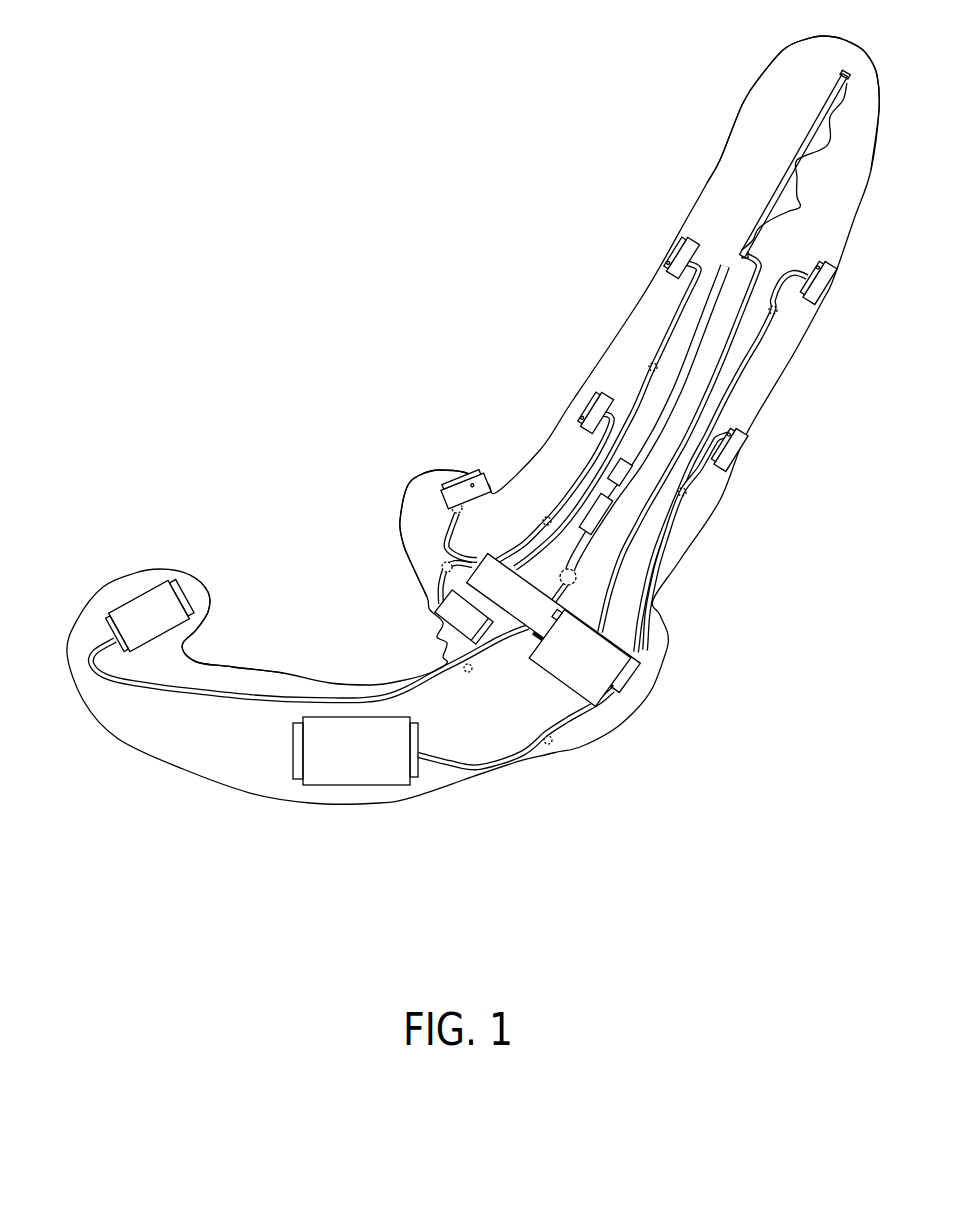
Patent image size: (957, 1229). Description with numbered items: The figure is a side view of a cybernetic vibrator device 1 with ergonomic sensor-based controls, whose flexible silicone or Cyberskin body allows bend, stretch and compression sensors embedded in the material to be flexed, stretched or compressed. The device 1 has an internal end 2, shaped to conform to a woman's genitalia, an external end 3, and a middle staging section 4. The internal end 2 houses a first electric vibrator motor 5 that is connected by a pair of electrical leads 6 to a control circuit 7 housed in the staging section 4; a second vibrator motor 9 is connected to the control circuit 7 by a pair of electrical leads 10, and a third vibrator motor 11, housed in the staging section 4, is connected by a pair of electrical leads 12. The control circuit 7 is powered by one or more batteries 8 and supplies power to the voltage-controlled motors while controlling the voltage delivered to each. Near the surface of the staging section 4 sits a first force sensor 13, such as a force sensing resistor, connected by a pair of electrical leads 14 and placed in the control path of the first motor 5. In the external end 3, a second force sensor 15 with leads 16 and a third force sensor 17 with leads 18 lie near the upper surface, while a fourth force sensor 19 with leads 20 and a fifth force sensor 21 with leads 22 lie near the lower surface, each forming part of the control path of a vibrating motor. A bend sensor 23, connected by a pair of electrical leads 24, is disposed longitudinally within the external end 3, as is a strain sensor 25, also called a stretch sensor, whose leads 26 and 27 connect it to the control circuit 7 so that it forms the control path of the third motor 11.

The cybernetic vibrator device 1 is at (55, 436).
The internal end 2 is at (285, 677).
The external end 3 is at (707, 183).
The staging section 4 is at (402, 547).
The first electric vibrator motor 5 is at (143, 623).
The pair of electrical leads 6 is at (470, 672).
The control circuit 7 is at (537, 623).
The batteries 8 is at (548, 674).
The second vibrator motor 9 is at (348, 758).
The pair of electrical leads 10 is at (546, 737).
The third vibrator motor 11 is at (452, 625).
The pair of electrical leads 12 is at (444, 562).
The first force sensor 13 is at (443, 493).
The pair of electrical leads 14 is at (459, 514).
The second force sensor 15 is at (582, 431).
The pair of electrical leads 16 is at (545, 519).
The third force sensor 17 is at (670, 278).
The pair of electrical leads 18 is at (651, 364).
The fourth force sensor 19 is at (722, 474).
The pair of electrical leads 20 is at (685, 497).
The fifth force sensor 21 is at (808, 300).
The pair of electrical leads 22 is at (777, 313).
The bend sensor 23 is at (719, 270).
The pair of electrical leads 24 is at (570, 585).
The strain sensor 25 is at (793, 157).
The electrical lead 26 is at (752, 254).
The electrical lead 27 is at (796, 206).